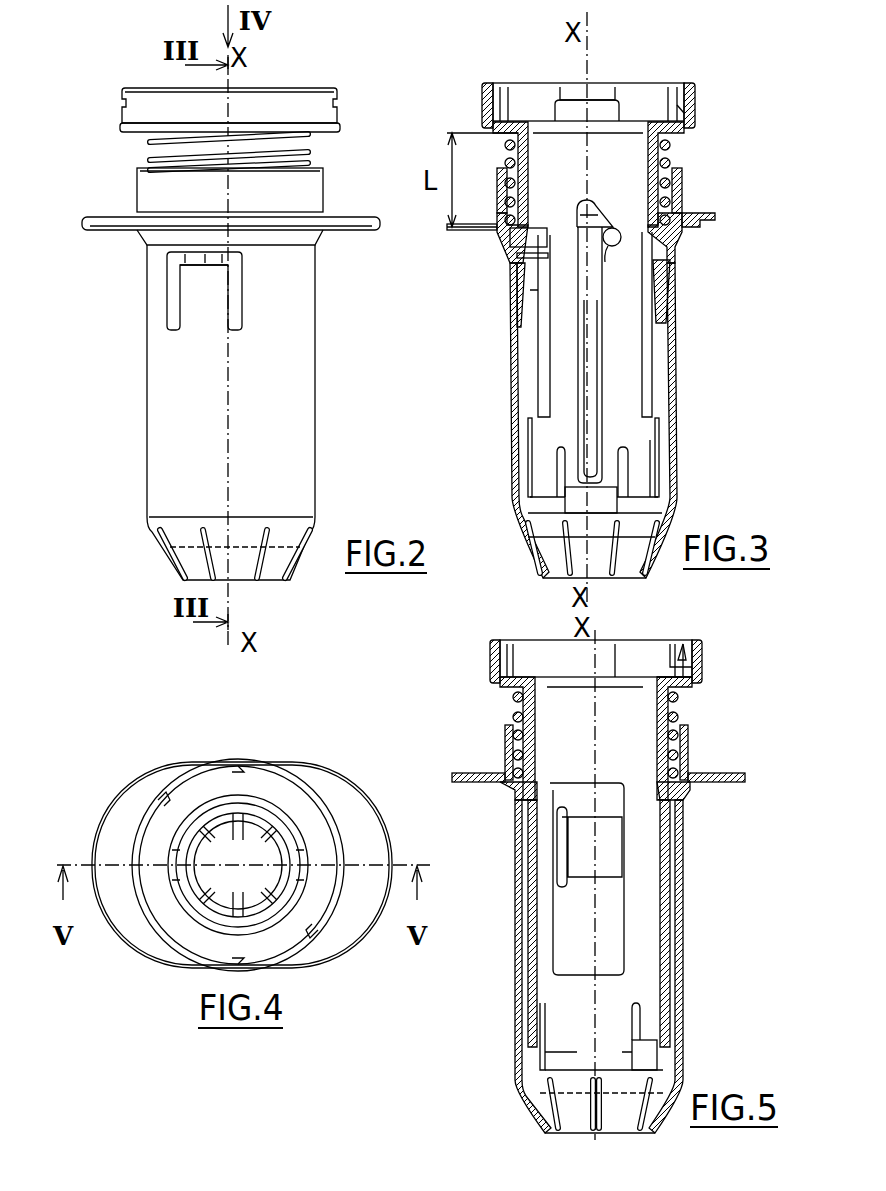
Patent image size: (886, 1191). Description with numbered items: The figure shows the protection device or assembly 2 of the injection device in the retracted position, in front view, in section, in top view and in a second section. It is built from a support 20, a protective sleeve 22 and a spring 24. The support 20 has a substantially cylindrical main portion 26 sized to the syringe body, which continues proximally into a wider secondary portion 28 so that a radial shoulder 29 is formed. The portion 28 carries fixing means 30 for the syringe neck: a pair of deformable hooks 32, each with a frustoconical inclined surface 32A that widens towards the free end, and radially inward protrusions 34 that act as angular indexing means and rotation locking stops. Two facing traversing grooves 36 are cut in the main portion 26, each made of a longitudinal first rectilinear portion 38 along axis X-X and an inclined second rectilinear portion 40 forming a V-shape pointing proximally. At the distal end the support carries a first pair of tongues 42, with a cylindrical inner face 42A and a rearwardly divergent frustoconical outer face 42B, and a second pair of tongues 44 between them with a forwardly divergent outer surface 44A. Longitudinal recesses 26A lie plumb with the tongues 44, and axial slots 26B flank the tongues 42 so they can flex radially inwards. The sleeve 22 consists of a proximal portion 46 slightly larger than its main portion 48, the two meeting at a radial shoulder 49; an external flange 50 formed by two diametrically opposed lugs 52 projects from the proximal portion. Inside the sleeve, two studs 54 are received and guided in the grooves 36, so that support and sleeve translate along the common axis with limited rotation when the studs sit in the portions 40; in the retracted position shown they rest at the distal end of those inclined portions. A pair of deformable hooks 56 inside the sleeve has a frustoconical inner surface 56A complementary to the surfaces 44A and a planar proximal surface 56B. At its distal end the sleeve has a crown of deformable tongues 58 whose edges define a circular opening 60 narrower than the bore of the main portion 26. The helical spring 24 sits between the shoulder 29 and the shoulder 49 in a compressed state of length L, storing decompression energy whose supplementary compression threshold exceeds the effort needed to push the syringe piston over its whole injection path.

In FIG. 2, the assembly 2 is at (149, 427).
In FIG. 3, the assembly 2 is at (705, 323).
In FIG. 4, the assembly 2 is at (130, 975).
In FIG. 5, the assembly 2 is at (752, 752).
In FIG. 2, the support 20 is at (343, 109).
In FIG. 3, the support 20 is at (668, 140).
In FIG. 5, the support 20 is at (513, 706).
In FIG. 2, the protective sleeve 22 is at (321, 428).
In FIG. 3, the protective sleeve 22 is at (677, 361).
In FIG. 5, the protective sleeve 22 is at (687, 918).
In FIG. 3, the spring 24 is at (683, 168).
In FIG. 5, the spring 24 is at (680, 707).
In FIG. 3, the main portion 26 is at (507, 157).
In FIG. 5, the main portion 26 is at (538, 715).
In FIG. 3, the longitudinal recesses 26A is at (648, 320).
In FIG. 3, the axial slots 26B is at (558, 467).
In FIG. 3, the secondary portion 28 is at (482, 103).
In FIG. 5, the secondary portion 28 is at (490, 653).
In FIG. 3, the radial shoulder 29 is at (681, 113).
In FIG. 5, the radial shoulder 29 is at (670, 690).
In FIG. 3, the fixing means 30 is at (581, 66).
In FIG. 4, the fixing means 30 is at (305, 782).
In FIG. 5, the fixing means 30 is at (622, 663).
In FIG. 3, the deformable hooks 32 is at (592, 87).
In FIG. 4, the deformable hooks 32 is at (340, 825).
In FIG. 5, the deformable hooks 32 is at (698, 650).
In FIG. 5, the inclined surface 32A is at (684, 644).
In FIG. 3, the protrusions 34 is at (498, 83).
In FIG. 4, the protrusions 34 is at (165, 800).
In FIG. 3, the traversing grooves 36 is at (598, 408).
In FIG. 3, the first rectilinear portion 38 is at (598, 430).
In FIG. 3, the second rectilinear portion 40 is at (598, 210).
In FIG. 3, the first pair of tongues 42 is at (618, 507).
In FIG. 5, the first pair of tongues 42 is at (658, 1053).
In FIG. 5, the inner face 42A is at (547, 1043).
In FIG. 5, the outer face 42B is at (541, 1070).
In FIG. 3, the second pair of tongues 44 is at (526, 455).
In FIG. 3, the outer surface 44A is at (660, 440).
In FIG. 3, the proximal portion 46 is at (684, 193).
In FIG. 5, the proximal portion 46 is at (505, 745).
In FIG. 3, the main portion 48 is at (668, 383).
In FIG. 5, the main portion 48 is at (518, 995).
In FIG. 3, the radial shoulder 49 is at (675, 222).
In FIG. 5, the radial shoulder 49 is at (527, 777).
In FIG. 2, the external flange 50 is at (104, 223).
In FIG. 3, the external flange 50 is at (700, 212).
In FIG. 4, the external flange 50 is at (168, 955).
In FIG. 4, the lugs 52 is at (125, 790).
In FIG. 5, the lugs 52 is at (473, 782).
In FIG. 3, the studs 54 is at (613, 246).
In FIG. 5, the studs 54 is at (537, 792).
In FIG. 2, the deformable hooks 56 is at (180, 295).
In FIG. 3, the deformable hooks 56 is at (512, 283).
In FIG. 3, the inner surface 56A is at (551, 291).
In FIG. 3, the proximal surface 56B is at (517, 257).
In FIG. 2, the deformable tongues 58 is at (242, 570).
In FIG. 3, the deformable tongues 58 is at (598, 553).
In FIG. 4, the deformable tongues 58 is at (222, 828).
In FIG. 5, the deformable tongues 58 is at (573, 1107).
In FIG. 3, the circular opening 60 is at (548, 578).
In FIG. 4, the circular opening 60 is at (226, 906).
In FIG. 5, the circular opening 60 is at (587, 1127).